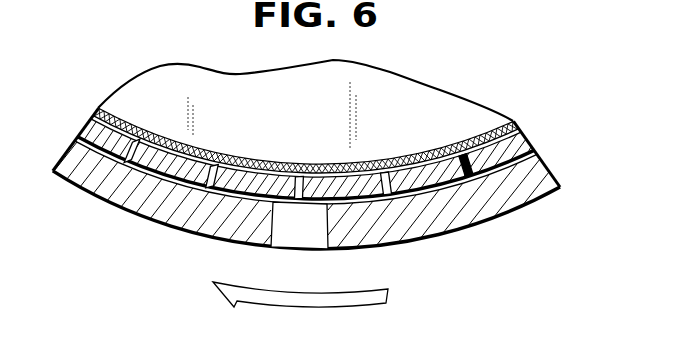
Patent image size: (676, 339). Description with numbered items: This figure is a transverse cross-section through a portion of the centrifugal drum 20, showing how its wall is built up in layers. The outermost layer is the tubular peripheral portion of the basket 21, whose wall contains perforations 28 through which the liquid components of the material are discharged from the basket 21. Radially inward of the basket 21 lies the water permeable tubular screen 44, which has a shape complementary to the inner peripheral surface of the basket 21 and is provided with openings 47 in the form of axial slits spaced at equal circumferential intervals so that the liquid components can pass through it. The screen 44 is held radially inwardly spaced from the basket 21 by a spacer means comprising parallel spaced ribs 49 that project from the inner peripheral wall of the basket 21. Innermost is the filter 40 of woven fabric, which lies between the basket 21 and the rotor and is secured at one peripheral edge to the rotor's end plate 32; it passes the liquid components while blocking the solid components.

The centrifugal drum 20 is at (441, 79).
The basket 21 is at (151, 211).
The perforations 28 is at (307, 238).
The end plate 32 is at (163, 82).
The filter 40 is at (116, 117).
The tubular screen 44 is at (515, 156).
The openings 47 is at (211, 190).
The ribs 49 is at (457, 181).